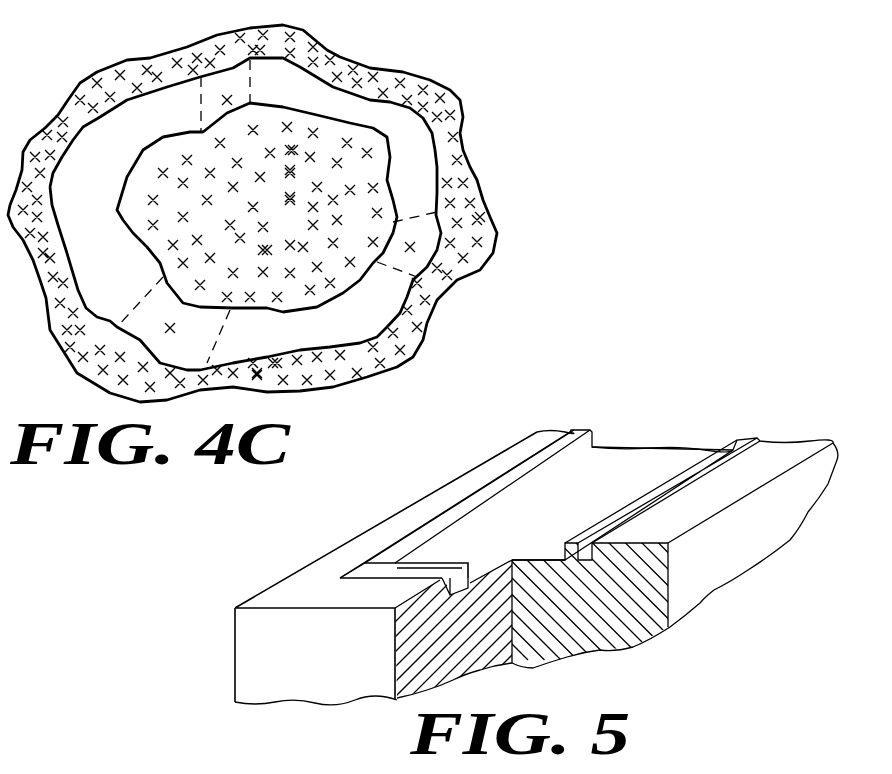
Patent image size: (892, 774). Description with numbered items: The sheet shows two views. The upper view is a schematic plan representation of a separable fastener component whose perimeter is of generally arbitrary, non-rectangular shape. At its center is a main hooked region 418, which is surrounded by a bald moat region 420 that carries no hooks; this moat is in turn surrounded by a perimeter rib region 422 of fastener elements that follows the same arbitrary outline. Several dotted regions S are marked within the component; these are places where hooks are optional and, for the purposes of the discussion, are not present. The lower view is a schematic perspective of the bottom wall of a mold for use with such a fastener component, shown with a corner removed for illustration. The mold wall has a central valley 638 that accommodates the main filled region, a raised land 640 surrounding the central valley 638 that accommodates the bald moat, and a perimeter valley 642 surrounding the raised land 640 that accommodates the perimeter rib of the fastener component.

In FIG. 4C, the main hooked region 418 is at (363, 140).
In FIG. 4C, the bald moat region 420 is at (417, 177).
In FIG. 4C, the perimeter rib region 422 is at (463, 214).
In FIG. 4C, the dotted regions S is at (235, 80).
In FIG. 5, the central valley 638 is at (583, 518).
In FIG. 5, the raised land 640 is at (420, 563).
In FIG. 5, the perimeter valley 642 is at (355, 576).